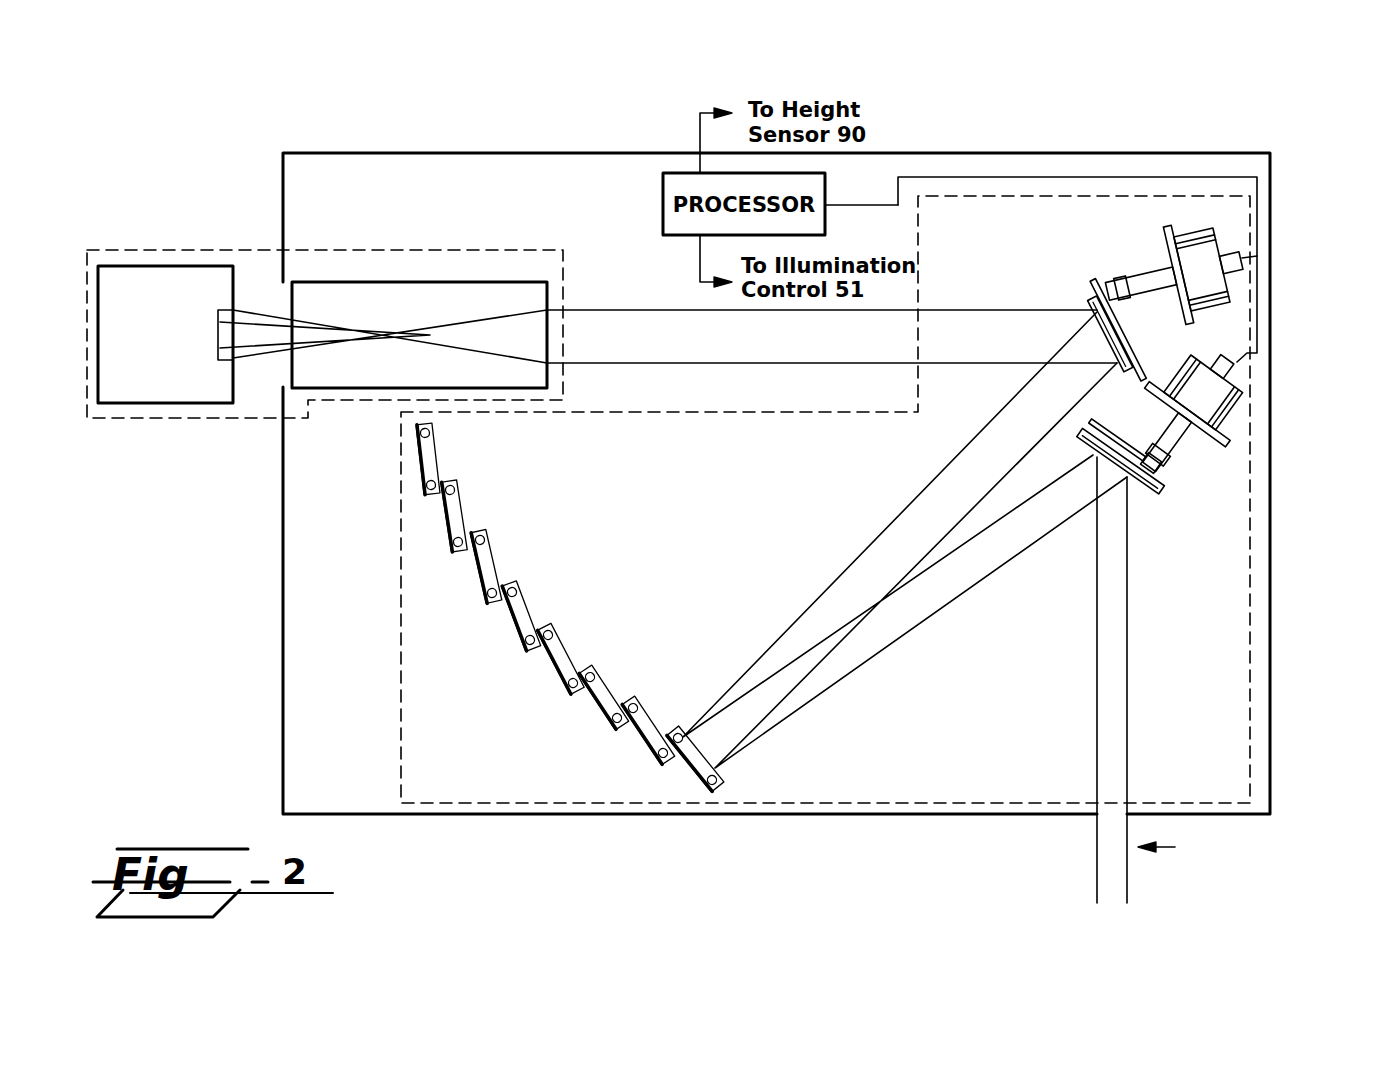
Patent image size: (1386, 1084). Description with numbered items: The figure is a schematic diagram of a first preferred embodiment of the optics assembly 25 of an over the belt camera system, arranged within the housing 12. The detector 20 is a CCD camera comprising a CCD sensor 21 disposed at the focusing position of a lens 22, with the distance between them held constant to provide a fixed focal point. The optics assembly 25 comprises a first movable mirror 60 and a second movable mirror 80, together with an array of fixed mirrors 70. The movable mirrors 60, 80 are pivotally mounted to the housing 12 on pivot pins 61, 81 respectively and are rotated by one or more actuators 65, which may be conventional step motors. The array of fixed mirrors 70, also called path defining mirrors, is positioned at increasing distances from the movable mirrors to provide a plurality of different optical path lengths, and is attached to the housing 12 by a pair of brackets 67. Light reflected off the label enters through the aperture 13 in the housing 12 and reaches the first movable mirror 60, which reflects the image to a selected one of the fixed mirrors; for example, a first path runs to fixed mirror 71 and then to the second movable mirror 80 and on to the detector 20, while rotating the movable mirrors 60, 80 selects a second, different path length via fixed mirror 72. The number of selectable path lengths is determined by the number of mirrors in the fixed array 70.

The housing 12 is at (1233, 152).
The aperture 13 is at (1097, 815).
The detector 20 is at (150, 423).
The CCD sensor 21 is at (217, 332).
The lens 22 is at (418, 282).
The optics assembly 25 is at (403, 572).
The first movable mirror 60 is at (1132, 482).
The pivot pin 61 is at (1113, 457).
The actuator 65 is at (1197, 233).
The brackets 67 is at (610, 607).
The array of fixed mirrors 70 is at (425, 488).
The fixed mirror 71 is at (715, 775).
The fixed mirror 72 is at (438, 428).
The second movable mirror 80 is at (1097, 282).
The pivot pin 81 is at (1120, 313).